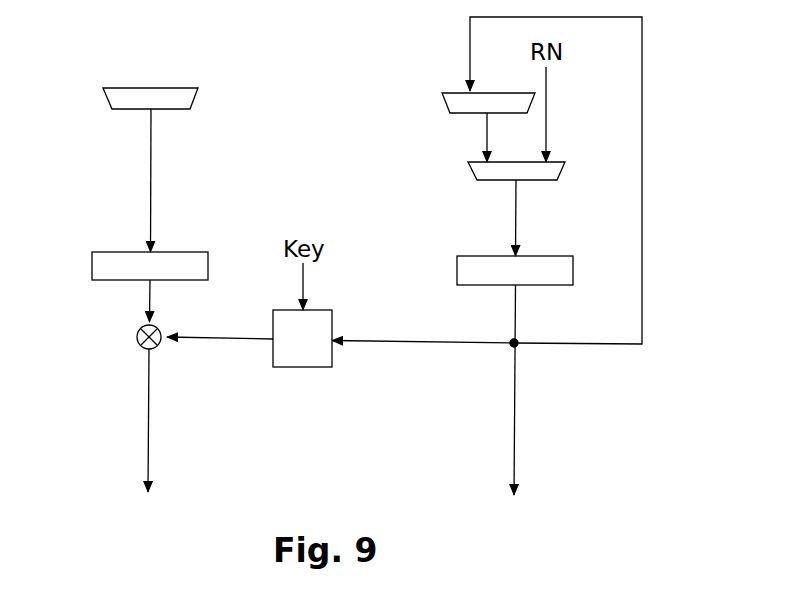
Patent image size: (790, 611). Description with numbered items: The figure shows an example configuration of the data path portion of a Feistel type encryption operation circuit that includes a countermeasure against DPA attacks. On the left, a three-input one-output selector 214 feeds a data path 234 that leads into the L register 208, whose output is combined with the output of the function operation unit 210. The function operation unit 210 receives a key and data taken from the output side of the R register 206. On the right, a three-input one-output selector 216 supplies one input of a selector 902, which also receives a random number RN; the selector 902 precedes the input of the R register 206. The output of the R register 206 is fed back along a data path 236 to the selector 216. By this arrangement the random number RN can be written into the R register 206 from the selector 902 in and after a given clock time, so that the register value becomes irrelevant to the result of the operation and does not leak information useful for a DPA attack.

The 3-input-1-output selector 214 is at (198, 97).
The data path from 214 to register L 234 is at (151, 178).
The L register 208 is at (112, 252).
The function operation unit 210 is at (300, 367).
The data path 236 is at (642, 172).
The 3-input-1-output selector 216 is at (440, 95).
The selector 902 is at (468, 163).
The R register 206 is at (557, 256).